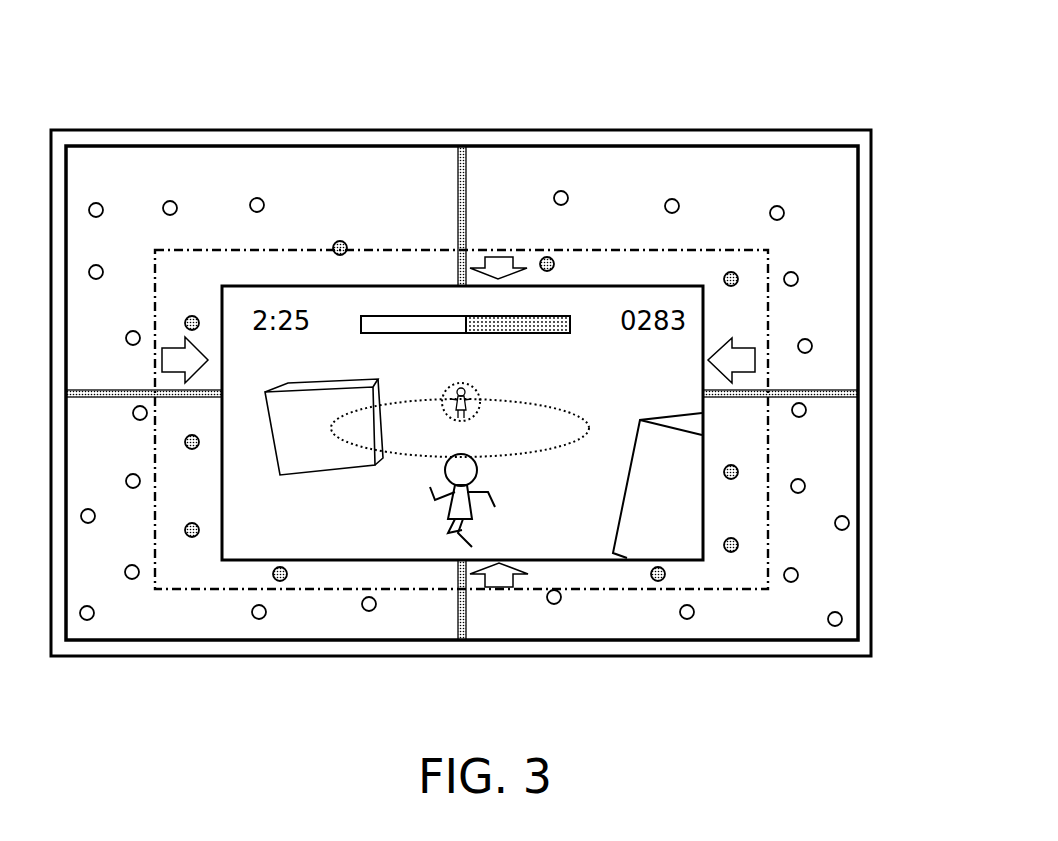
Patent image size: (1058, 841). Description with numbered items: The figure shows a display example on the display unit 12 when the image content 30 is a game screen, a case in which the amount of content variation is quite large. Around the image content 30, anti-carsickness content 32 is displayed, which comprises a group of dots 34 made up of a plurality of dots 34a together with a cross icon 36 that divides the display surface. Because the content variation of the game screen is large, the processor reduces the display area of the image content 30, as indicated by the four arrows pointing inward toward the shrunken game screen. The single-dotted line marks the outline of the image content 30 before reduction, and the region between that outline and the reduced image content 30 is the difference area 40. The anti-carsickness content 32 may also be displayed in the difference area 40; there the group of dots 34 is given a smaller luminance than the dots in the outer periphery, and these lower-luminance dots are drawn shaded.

The display unit 12 is at (783, 130).
The anti-carsickness content 32 is at (607, 58).
The cross icon 36 is at (466, 188).
The group of dots 34 is at (566, 176).
The dots 34a is at (731, 272).
The difference area 40 is at (752, 322).
The image content 30 is at (678, 463).